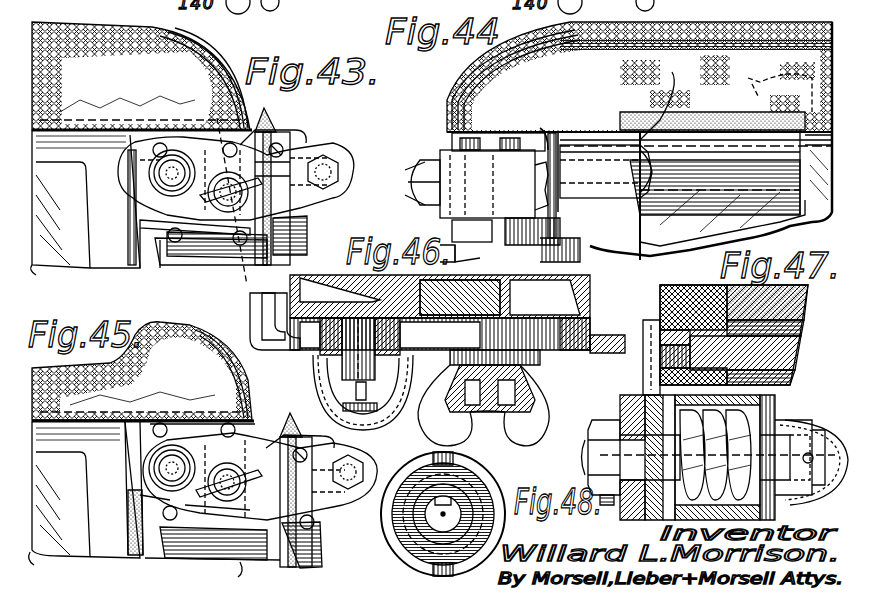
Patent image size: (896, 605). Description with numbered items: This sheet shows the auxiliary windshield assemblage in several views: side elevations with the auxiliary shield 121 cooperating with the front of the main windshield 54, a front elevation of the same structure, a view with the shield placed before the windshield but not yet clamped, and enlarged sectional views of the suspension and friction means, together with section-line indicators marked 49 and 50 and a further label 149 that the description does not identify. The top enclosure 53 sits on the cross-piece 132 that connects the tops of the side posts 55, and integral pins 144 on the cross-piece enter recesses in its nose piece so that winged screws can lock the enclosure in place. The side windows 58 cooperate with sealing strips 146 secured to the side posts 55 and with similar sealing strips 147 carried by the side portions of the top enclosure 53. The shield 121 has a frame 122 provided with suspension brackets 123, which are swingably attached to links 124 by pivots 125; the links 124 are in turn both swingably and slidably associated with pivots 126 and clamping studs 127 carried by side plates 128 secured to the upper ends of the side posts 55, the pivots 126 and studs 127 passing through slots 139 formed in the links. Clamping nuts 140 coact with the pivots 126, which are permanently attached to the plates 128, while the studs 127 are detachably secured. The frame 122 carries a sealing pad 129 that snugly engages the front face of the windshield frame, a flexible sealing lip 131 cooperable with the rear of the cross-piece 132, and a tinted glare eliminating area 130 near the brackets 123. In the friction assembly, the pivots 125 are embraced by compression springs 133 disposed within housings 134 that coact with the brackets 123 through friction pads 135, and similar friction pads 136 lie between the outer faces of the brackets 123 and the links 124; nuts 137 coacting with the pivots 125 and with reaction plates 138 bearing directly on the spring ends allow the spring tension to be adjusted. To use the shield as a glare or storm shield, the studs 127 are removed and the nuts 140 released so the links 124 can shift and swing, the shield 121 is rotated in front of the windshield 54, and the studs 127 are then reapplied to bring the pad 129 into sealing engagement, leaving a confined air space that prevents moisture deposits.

In FIG. 43, the pivot axis 49 is at (106, 160).
In FIG. 43, the pivot axis 50 is at (232, 112).
In FIG. 43, the top enclosure 53 is at (108, 14).
In FIG. 44, the top enclosure 53 is at (460, 68).
In FIG. 45, the top enclosure 53 is at (143, 371).
In FIG. 44, the main windshield 54 is at (800, 220).
In FIG. 44, the side posts 55 is at (512, 246).
In FIG. 46, the side posts 55 is at (520, 252).
In FIG. 45, the side posts 55 is at (215, 572).
In FIG. 43, the side windows 58 is at (35, 272).
In FIG. 45, the side windows 58 is at (45, 565).
In FIG. 47, the auxiliary shield 121 is at (712, 340).
In FIG. 43, the frame 122 is at (304, 232).
In FIG. 44, the frame 122 is at (650, 158).
In FIG. 47, the frame 122 is at (672, 332).
In FIG. 45, the frame 122 is at (302, 562).
In FIG. 43, the suspension brackets 123 is at (287, 137).
In FIG. 44, the suspension brackets 123 is at (542, 228).
In FIG. 47, the suspension brackets 123 is at (672, 335).
In FIG. 45, the suspension brackets 123 is at (332, 448).
In FIG. 43, the links 124 is at (323, 154).
In FIG. 44, the links 124 is at (476, 175).
In FIG. 46, the links 124 is at (255, 320).
In FIG. 47, the links 124 is at (620, 510).
In FIG. 45, the links 124 is at (349, 463).
In FIG. 43, the pivots 125 is at (372, 170).
In FIG. 47, the pivots 125 is at (604, 450).
In FIG. 45, the pivots 125 is at (352, 474).
In FIG. 48, the pivots 125 is at (440, 520).
In FIG. 43, the pivots 126 is at (170, 170).
In FIG. 46, the pivots 126 is at (372, 340).
In FIG. 43, the clamping studs 127 is at (190, 202).
In FIG. 46, the clamping studs 127 is at (500, 412).
In FIG. 45, the clamping studs 127 is at (170, 500).
In FIG. 43, the side plates 128 is at (135, 258).
In FIG. 44, the side plates 128 is at (458, 246).
In FIG. 46, the side plates 128 is at (318, 305).
In FIG. 45, the side plates 128 is at (170, 536).
In FIG. 43, the sealing pad 129 is at (240, 246).
In FIG. 47, the sealing pad 129 is at (710, 290).
In FIG. 45, the sealing pad 129 is at (230, 425).
In FIG. 44, the tinted glare eliminating area 130 is at (704, 152).
In FIG. 43, the flexible sealing lip 131 is at (272, 118).
In FIG. 44, the flexible sealing lip 131 is at (718, 94).
In FIG. 45, the flexible sealing lip 131 is at (298, 420).
In FIG. 46, the cross-piece 132 is at (300, 275).
In FIG. 47, the compression springs 133 is at (770, 362).
In FIG. 48, the compression springs 133 is at (400, 530).
In FIG. 44, the housings 134 is at (606, 171).
In FIG. 47, the housings 134 is at (760, 410).
In FIG. 48, the housings 134 is at (472, 476).
In FIG. 44, the friction pads 135 is at (560, 200).
In FIG. 47, the friction pads 135 is at (650, 388).
In FIG. 44, the friction pads 136 is at (548, 140).
In FIG. 47, the friction pads 136 is at (643, 393).
In FIG. 47, the nuts 137 is at (808, 440).
In FIG. 47, the reaction plates 138 is at (778, 398).
In FIG. 48, the reaction plates 138 is at (470, 490).
In FIG. 43, the slots 139 is at (155, 170).
In FIG. 46, the slots 139 is at (465, 350).
In FIG. 45, the slots 139 is at (204, 462).
In FIG. 46, the clamping nuts 140 is at (332, 372).
In FIG. 45, the clamping nuts 140 is at (170, 466).
In FIG. 44, the pins 144 is at (760, 83).
In FIG. 43, the sealing strips 146 is at (122, 262).
In FIG. 45, the sealing strips 146 is at (138, 558).
In FIG. 45, the sealing strips 147 is at (130, 430).
In FIG. 45, the lug 149 is at (288, 371).